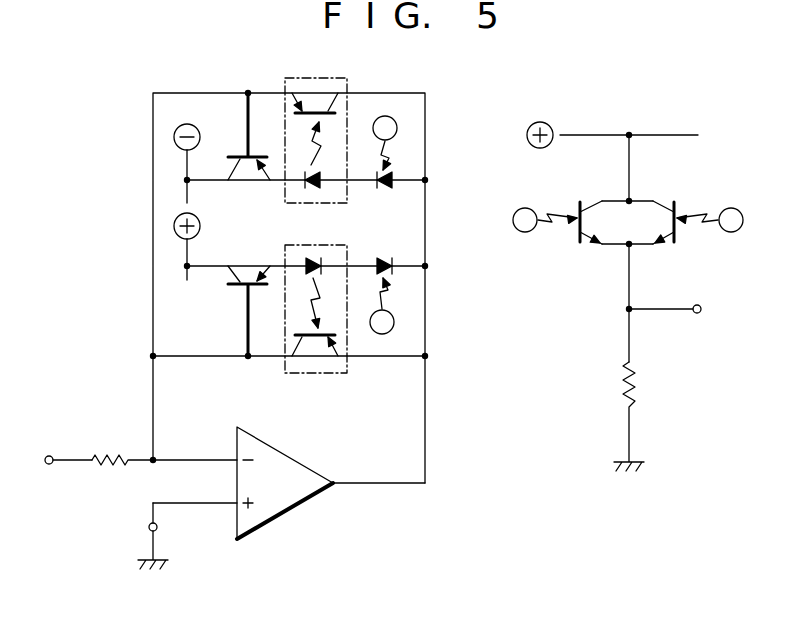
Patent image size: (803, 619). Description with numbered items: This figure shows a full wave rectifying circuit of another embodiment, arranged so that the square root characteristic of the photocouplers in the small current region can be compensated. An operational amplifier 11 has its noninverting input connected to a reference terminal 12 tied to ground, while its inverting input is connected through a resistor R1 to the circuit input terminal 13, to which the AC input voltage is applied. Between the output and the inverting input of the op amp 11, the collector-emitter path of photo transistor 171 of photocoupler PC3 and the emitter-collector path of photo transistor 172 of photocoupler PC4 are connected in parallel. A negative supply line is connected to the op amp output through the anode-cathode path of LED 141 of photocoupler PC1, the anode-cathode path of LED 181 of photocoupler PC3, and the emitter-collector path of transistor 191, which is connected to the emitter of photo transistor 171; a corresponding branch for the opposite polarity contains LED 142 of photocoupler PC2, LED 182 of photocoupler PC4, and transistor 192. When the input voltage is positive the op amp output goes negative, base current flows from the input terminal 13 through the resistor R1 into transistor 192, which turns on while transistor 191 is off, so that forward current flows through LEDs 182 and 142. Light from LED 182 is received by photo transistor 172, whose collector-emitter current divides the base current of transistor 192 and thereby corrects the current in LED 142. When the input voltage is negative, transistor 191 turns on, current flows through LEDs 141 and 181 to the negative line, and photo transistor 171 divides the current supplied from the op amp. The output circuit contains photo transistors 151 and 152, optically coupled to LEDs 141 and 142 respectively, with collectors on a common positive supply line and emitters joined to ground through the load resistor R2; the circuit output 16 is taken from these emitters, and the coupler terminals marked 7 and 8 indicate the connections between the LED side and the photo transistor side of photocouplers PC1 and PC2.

The operational amplifier 11 is at (288, 459).
The terminal 12 is at (148, 527).
The circuit input terminal 13 is at (49, 456).
The resistor R1 is at (111, 457).
The load resistor R2 is at (636, 386).
The circuit output 16 is at (694, 305).
The photo transistor 171 is at (295, 113).
The photo transistor 172 is at (322, 355).
The LED 181 is at (301, 185).
The LED 182 is at (299, 259).
The first photoconverting element 141 is at (384, 189).
The second photoconverting element 142 is at (396, 270).
The transistor 191 is at (228, 152).
The transistor 192 is at (232, 285).
The photo transistor 151 is at (662, 202).
The photo transistor 152 is at (570, 202).
The photocoupler PC1 is at (557, 157).
The photocoupler PC2 is at (469, 270).
The photocoupler PC3 is at (298, 76).
The photocoupler PC4 is at (332, 245).
The photocoupler terminal 7 is at (558, 174).
The photocoupler terminal 8 is at (453, 271).